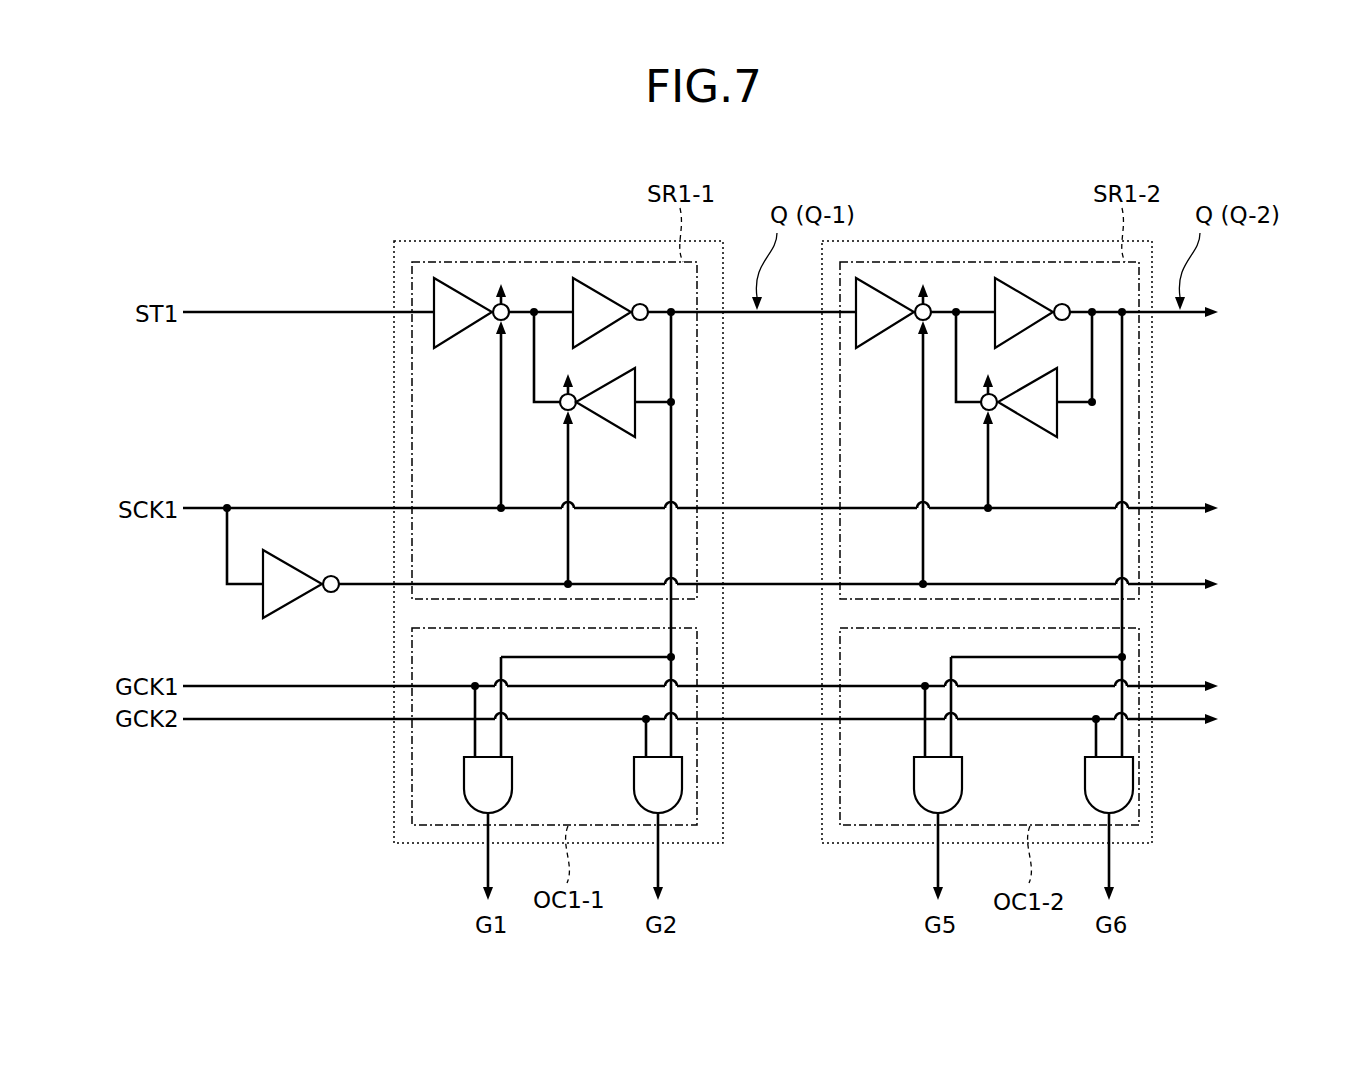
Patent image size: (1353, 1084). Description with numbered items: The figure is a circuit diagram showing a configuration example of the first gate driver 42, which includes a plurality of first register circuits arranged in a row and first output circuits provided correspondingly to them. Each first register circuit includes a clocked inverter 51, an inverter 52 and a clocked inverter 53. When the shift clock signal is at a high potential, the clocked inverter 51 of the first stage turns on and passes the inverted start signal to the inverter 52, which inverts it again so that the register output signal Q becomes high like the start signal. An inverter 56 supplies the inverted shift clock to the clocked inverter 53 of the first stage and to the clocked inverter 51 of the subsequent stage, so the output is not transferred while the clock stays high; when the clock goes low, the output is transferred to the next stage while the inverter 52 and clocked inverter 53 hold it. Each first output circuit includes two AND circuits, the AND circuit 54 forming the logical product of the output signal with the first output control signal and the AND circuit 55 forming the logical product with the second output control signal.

The gate driver 42 is at (1181, 163).
The clocked inverter 51 is at (466, 296).
The inverter 52 is at (604, 295).
The clocked inverter 53 is at (636, 426).
The AND circuit 54 is at (464, 778).
The AND circuit 55 is at (682, 762).
The inverter 56 is at (263, 602).